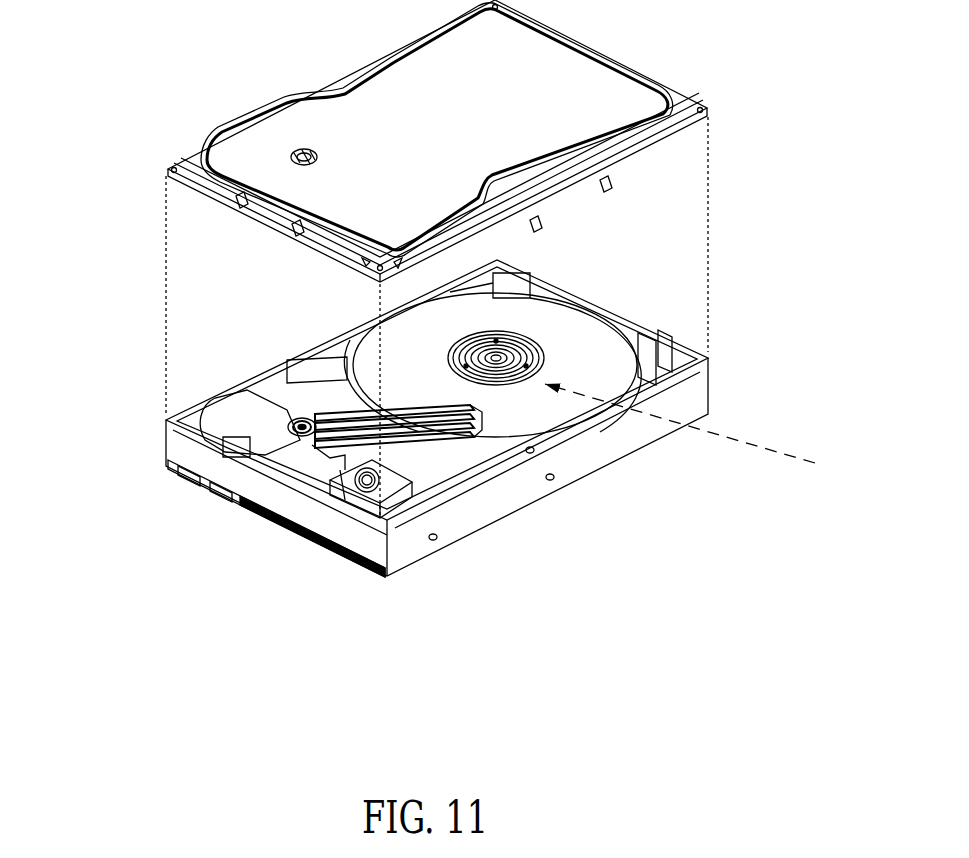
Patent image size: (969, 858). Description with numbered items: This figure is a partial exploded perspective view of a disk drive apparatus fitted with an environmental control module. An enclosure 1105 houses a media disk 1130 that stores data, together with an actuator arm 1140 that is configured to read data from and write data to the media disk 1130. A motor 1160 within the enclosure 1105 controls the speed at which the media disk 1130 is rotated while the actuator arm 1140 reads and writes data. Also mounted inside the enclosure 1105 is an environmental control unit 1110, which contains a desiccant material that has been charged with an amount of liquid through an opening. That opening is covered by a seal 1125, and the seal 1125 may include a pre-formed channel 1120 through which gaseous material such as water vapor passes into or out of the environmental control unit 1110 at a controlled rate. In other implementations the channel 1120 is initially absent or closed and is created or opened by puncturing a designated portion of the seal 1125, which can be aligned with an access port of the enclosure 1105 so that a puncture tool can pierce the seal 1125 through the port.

The enclosure 1105 is at (715, 355).
The environmental control unit 1110 is at (399, 503).
The channel 1120 is at (366, 484).
The seal 1125 is at (361, 468).
The media disk 1130 is at (400, 335).
The actuator arm 1140 is at (258, 420).
The motor 1160 is at (702, 435).